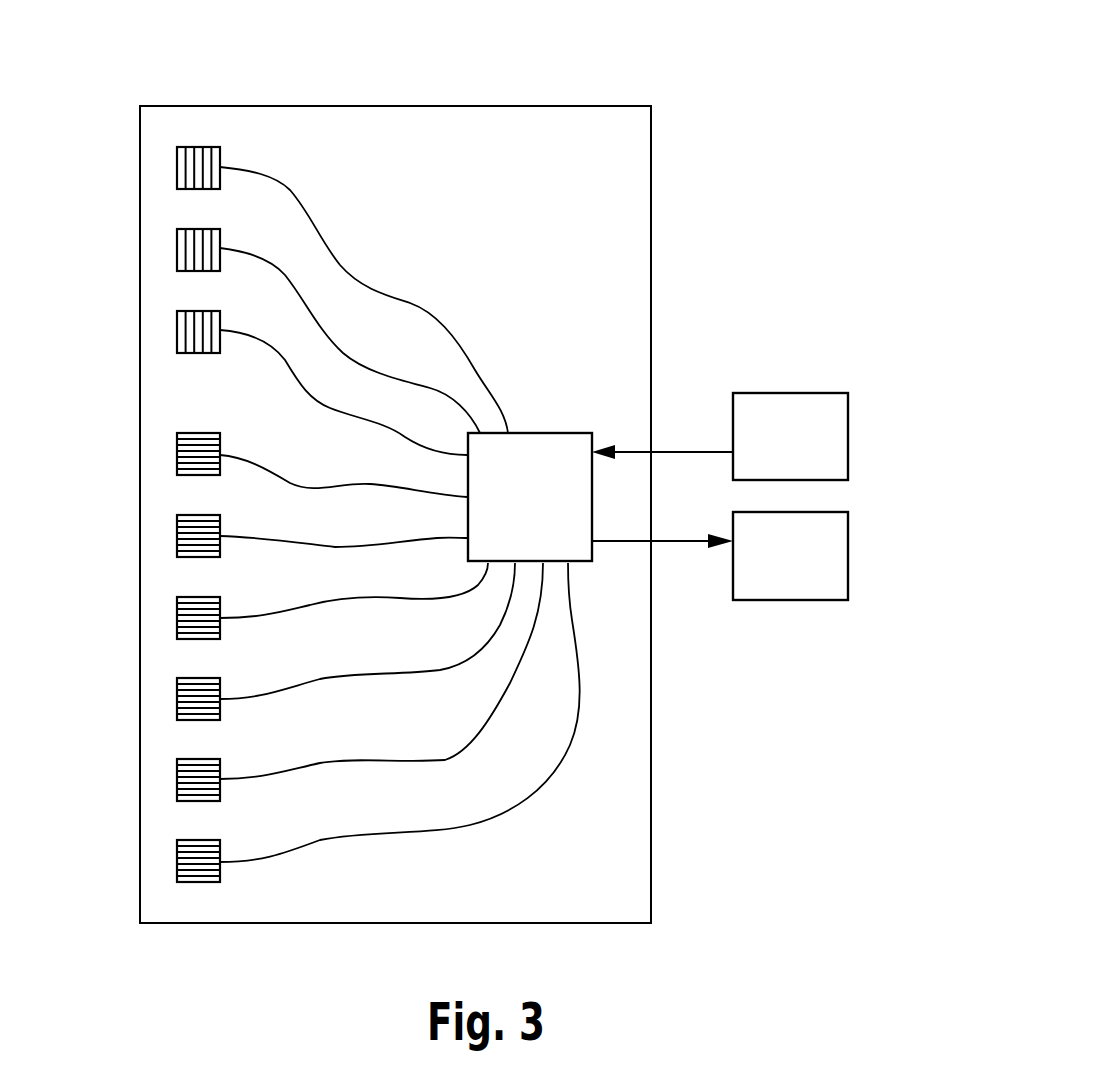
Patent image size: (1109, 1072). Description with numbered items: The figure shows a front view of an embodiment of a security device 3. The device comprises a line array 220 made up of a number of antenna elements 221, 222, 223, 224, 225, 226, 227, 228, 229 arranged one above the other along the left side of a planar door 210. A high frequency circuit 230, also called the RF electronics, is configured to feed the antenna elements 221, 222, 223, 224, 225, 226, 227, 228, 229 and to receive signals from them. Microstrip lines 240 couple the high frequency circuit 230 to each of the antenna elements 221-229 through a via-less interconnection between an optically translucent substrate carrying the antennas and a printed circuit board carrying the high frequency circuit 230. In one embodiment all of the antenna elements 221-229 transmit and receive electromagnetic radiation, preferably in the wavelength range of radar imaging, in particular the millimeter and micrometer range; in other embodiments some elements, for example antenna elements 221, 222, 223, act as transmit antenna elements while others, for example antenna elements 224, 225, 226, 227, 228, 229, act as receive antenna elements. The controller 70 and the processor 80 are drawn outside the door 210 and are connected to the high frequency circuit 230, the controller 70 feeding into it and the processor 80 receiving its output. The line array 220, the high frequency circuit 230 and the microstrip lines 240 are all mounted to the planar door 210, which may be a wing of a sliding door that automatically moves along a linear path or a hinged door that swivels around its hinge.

The security device 3 is at (747, 93).
The planar door 210 is at (379, 105).
The line array 220 is at (196, 115).
The antenna element 221 is at (177, 169).
The antenna element 222 is at (177, 251).
The antenna element 223 is at (177, 333).
The antenna element 224 is at (177, 455).
The antenna element 225 is at (177, 537).
The antenna element 226 is at (177, 619).
The antenna element 227 is at (177, 700).
The antenna element 228 is at (177, 781).
The antenna element 229 is at (177, 862).
The high frequency circuit 230 is at (555, 433).
The microstrip lines 240 is at (347, 357).
The controller 70 is at (848, 435).
The processor 80 is at (848, 520).